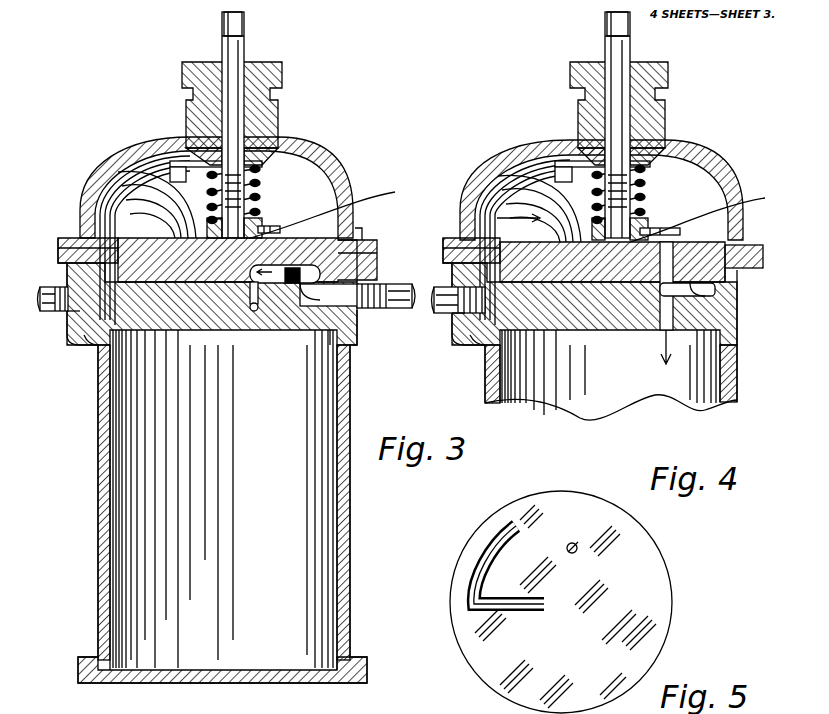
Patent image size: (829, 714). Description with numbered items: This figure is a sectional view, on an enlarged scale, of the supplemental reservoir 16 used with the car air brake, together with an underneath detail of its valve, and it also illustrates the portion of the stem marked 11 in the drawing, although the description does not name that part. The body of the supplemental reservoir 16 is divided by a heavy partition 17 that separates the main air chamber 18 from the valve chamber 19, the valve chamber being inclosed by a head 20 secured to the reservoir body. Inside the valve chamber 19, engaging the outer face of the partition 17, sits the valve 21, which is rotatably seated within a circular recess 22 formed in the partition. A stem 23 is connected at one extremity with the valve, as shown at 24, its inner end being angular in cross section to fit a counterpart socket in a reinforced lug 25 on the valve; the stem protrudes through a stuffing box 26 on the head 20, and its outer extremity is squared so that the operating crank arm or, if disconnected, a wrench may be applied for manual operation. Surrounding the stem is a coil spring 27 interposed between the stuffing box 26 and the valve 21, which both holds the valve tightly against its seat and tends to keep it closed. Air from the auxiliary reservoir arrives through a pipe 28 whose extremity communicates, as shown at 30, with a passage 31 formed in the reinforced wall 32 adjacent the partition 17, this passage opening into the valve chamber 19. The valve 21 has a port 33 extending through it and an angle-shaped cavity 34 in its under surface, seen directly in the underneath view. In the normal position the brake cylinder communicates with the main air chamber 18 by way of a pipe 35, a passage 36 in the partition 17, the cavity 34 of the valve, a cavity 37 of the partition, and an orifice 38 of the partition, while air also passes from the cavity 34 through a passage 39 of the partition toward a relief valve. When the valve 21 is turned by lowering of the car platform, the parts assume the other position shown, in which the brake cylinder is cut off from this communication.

In FIG. 3, the valve stem head 11 is at (246, 30).
In FIG. 4, the valve stem head 11 is at (603, 30).
In FIG. 3, the supplemental reservoir 16 is at (212, 460).
In FIG. 4, the supplemental reservoir 16 is at (609, 329).
In FIG. 3, the partition 17 is at (192, 330).
In FIG. 4, the partition 17 is at (625, 318).
In FIG. 3, the main air chamber 18 is at (264, 480).
In FIG. 4, the main air chamber 18 is at (616, 386).
In FIG. 3, the valve chamber 19 is at (262, 226).
In FIG. 4, the valve chamber 19 is at (672, 232).
In FIG. 3, the head 20 is at (222, 182).
In FIG. 4, the head 20 is at (601, 177).
In FIG. 3, the valve 21 is at (327, 206).
In FIG. 4, the valve 21 is at (638, 231).
In FIG. 5, the valve 21 is at (561, 602).
In FIG. 3, the circular recess 22 is at (370, 252).
In FIG. 4, the circular recess 22 is at (735, 272).
In FIG. 3, the stem 23 is at (246, 52).
In FIG. 4, the stem 23 is at (630, 72).
In FIG. 3, the stem connection 24 is at (207, 194).
In FIG. 4, the stem connection 24 is at (500, 150).
In FIG. 3, the reinforced lug 25 is at (120, 152).
In FIG. 4, the reinforced lug 25 is at (490, 180).
In FIG. 3, the stuffing box 26 is at (215, 105).
In FIG. 4, the stuffing box 26 is at (601, 104).
In FIG. 3, the coil spring 27 is at (165, 148).
In FIG. 4, the coil spring 27 is at (548, 148).
In FIG. 3, the pipe 28 is at (57, 312).
In FIG. 4, the pipe 28 is at (440, 314).
In FIG. 3, the pipe connection 30 is at (82, 320).
In FIG. 4, the pipe connection 30 is at (458, 322).
In FIG. 3, the passage 31 is at (86, 350).
In FIG. 4, the passage 31 is at (478, 348).
In FIG. 3, the reinforced wall 32 is at (62, 236).
In FIG. 4, the reinforced wall 32 is at (475, 340).
In FIG. 4, the port 33 is at (745, 245).
In FIG. 5, the port 33 is at (582, 532).
In FIG. 3, the angle-shaped cavity 34 is at (300, 300).
In FIG. 5, the angle-shaped cavity 34 is at (500, 561).
In FIG. 3, the pipe 35 is at (395, 290).
In FIG. 3, the passage 36 is at (325, 340).
In FIG. 4, the cavity 37 is at (712, 290).
In FIG. 4, the orifice 38 is at (673, 312).
In FIG. 3, the passage 39 is at (254, 312).